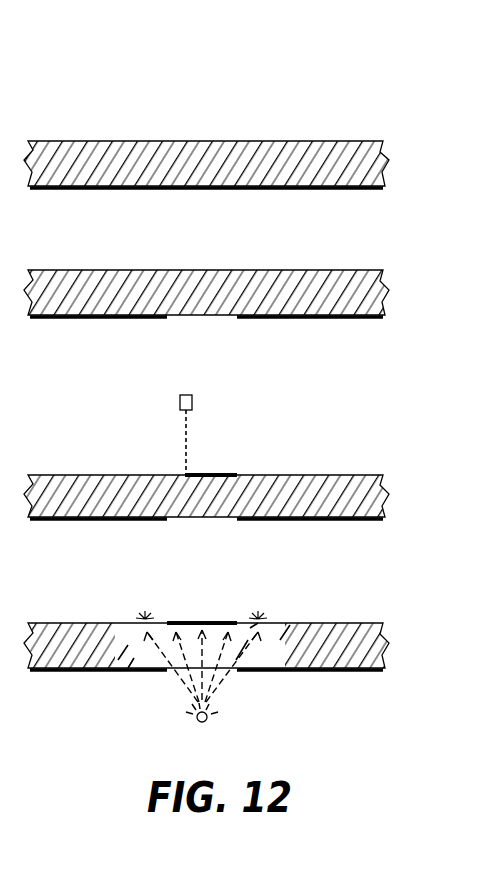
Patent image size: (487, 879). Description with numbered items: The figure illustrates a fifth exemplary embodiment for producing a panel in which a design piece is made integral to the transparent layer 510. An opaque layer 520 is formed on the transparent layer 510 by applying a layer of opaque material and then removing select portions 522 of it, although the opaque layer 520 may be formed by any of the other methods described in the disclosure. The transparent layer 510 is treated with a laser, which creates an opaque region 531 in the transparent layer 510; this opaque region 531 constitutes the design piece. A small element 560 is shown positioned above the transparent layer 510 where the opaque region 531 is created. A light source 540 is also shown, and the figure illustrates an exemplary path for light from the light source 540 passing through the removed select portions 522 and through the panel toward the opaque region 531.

The transparent layer 510 is at (333, 141).
The opaque layer 520 is at (115, 190).
The select portions 522 is at (220, 317).
The opaque region 531 is at (218, 475).
The light source 540 is at (200, 722).
The sensor 560 is at (180, 403).